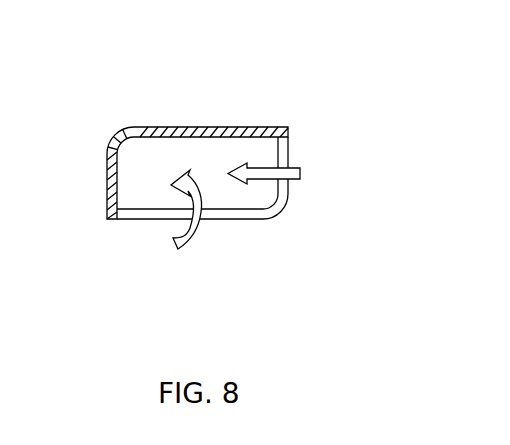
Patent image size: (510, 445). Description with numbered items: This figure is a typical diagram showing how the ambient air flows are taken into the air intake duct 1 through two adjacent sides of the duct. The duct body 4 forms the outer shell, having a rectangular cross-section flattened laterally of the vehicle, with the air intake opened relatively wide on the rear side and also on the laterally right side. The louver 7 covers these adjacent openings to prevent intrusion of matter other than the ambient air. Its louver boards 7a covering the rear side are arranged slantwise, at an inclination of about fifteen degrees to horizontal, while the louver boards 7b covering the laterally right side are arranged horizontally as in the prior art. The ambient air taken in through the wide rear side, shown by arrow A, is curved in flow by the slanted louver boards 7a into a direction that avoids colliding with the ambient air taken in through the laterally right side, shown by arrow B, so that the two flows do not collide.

The rotary electric machine / device 1 is at (268, 103).
The duct body 4 is at (150, 128).
The louver 7 is at (131, 229).
The louver boards 7a is at (233, 220).
The louver boards 7b is at (289, 187).
The arrow A is at (178, 250).
The arrow B is at (292, 169).